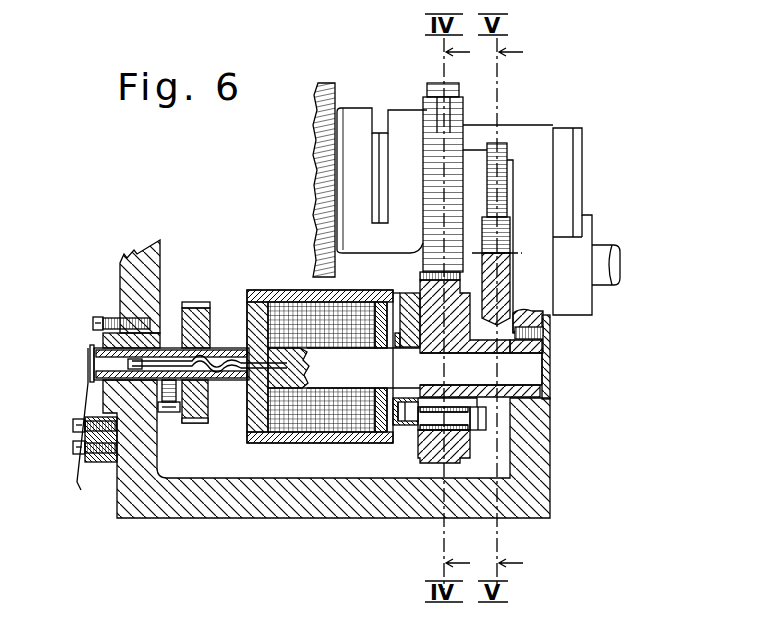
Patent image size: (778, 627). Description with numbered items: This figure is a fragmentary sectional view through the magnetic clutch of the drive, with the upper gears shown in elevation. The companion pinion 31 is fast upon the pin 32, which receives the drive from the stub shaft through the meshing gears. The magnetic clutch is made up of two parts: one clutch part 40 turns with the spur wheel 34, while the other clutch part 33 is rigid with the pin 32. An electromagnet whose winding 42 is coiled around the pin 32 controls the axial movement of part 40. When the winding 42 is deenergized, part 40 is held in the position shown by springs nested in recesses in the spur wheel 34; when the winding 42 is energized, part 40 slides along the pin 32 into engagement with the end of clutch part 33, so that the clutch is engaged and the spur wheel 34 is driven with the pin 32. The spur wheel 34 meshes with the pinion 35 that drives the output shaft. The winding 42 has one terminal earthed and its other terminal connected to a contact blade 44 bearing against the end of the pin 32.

The companion pinion 31 is at (198, 420).
The pin 32 is at (240, 383).
The clutch part 33 is at (335, 440).
The spur wheel 34 is at (418, 467).
The pinion 35 is at (440, 143).
The clutch part 40 is at (407, 443).
The winding 42 is at (310, 414).
The contact blade 44 is at (92, 352).